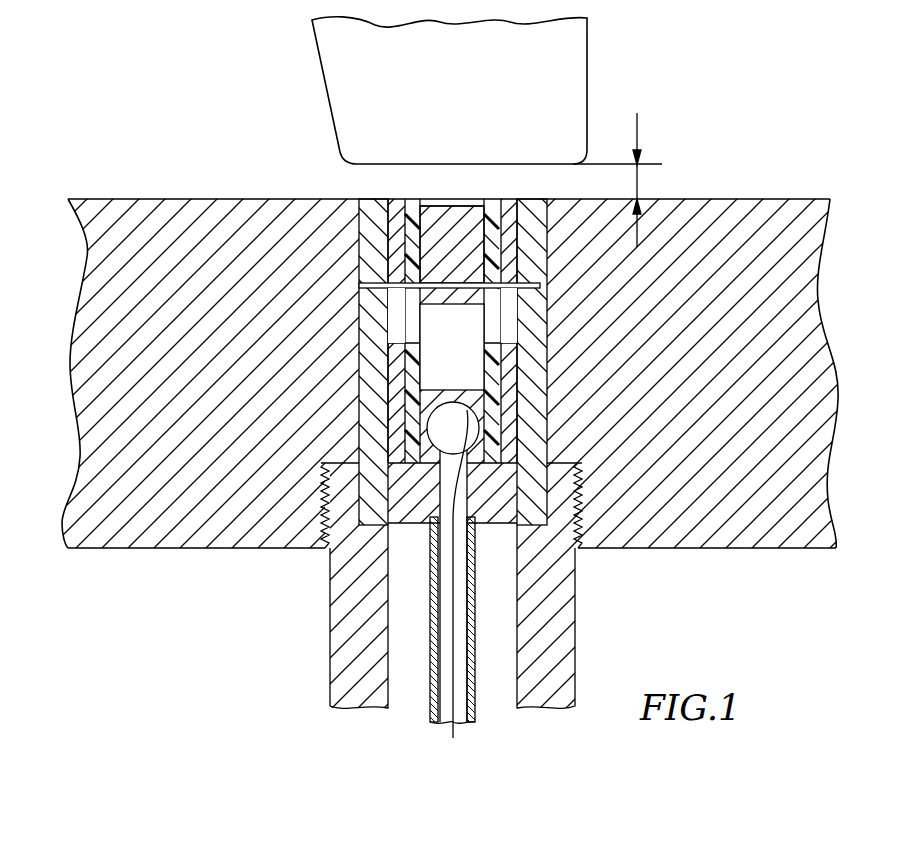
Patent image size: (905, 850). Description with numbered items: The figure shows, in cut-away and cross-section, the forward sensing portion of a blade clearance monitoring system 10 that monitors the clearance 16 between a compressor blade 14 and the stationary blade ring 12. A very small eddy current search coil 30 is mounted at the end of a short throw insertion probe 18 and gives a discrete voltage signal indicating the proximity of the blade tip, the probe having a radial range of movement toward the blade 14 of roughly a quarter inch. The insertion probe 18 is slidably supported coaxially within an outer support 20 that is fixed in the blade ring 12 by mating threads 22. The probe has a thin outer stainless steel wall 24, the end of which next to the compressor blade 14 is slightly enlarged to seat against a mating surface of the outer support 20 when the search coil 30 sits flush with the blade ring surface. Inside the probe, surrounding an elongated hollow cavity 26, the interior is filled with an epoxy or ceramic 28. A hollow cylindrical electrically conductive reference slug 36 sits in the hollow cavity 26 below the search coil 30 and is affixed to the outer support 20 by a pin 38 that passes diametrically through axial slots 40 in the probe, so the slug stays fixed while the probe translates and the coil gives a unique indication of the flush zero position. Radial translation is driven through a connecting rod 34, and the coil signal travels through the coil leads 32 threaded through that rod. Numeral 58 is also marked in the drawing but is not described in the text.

The blade clearance monitoring system 10 is at (615, 607).
The blade ring 12 is at (670, 314).
The compressor blade 14 is at (445, 88).
The clearance 16 is at (637, 180).
The insertion probe 18 is at (520, 382).
The outer support 20 is at (368, 373).
The mating threads 22 is at (580, 502).
The outer stainless steel wall 24 is at (520, 345).
The hollow cavity 26 is at (405, 388).
The epoxy or ceramic 28 is at (508, 440).
The eddy current search coil 30 is at (428, 199).
The coil leads 32 is at (457, 722).
The connecting rod 34 is at (436, 583).
The reference slug 36 is at (497, 236).
The pin 38 is at (488, 296).
The axial slots 40 is at (388, 312).
The top face 58 is at (512, 199).